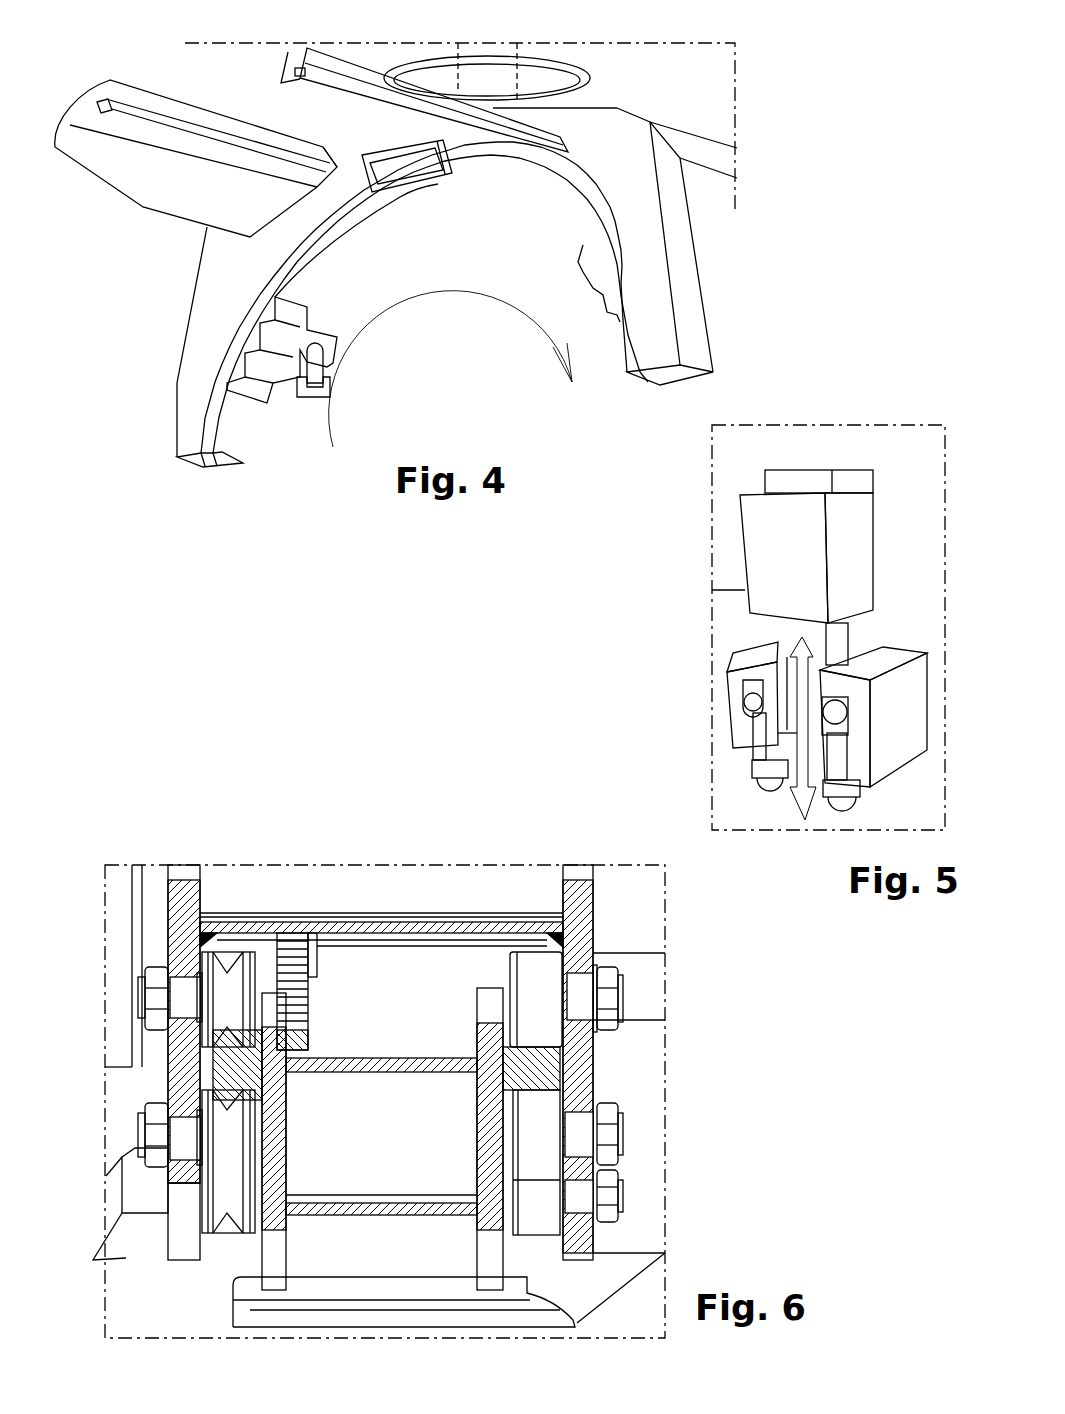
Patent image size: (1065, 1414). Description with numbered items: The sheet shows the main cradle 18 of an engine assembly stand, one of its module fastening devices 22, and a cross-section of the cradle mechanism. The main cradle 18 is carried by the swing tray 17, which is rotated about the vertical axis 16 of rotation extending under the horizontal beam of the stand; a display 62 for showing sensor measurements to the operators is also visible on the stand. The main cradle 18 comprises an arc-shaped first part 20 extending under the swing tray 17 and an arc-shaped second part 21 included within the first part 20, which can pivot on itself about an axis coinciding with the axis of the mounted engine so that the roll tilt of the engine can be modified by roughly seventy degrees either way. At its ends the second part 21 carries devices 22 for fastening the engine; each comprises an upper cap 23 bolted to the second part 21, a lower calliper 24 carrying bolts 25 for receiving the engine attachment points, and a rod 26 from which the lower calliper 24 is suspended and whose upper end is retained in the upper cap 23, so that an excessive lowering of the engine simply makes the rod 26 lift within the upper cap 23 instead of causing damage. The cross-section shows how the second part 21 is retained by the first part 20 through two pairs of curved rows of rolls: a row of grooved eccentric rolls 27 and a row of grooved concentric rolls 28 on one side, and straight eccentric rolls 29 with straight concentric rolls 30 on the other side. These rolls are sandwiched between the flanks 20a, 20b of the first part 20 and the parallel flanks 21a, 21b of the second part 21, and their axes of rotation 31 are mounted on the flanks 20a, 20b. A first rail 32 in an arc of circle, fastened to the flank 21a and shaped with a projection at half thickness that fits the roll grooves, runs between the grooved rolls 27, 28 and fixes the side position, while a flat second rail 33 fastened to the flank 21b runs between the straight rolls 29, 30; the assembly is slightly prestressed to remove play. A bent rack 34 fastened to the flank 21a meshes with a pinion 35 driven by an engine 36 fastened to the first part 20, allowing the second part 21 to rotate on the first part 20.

In FIG. 4, the vertical axis of rotation 16 is at (537, 55).
In FIG. 4, the swing tray 17 is at (164, 175).
In FIG. 4, the main cradle 18 is at (432, 336).
In FIG. 4, the first part 20 is at (235, 277).
In FIG. 6, the first part 20 is at (183, 1200).
In FIG. 6, the flank of the first part 20a is at (200, 893).
In FIG. 6, the flank of the first part 20b is at (597, 907).
In FIG. 4, the second part 21 is at (230, 325).
In FIG. 5, the second part 21 is at (732, 602).
In FIG. 6, the second part 21 is at (453, 1330).
In FIG. 6, the flank of the second part 21a is at (286, 1123).
In FIG. 6, the flank of the second part 21b is at (477, 1153).
In FIG. 4, the fastening device 22 is at (305, 418).
In FIG. 5, the fastening device 22 is at (748, 684).
In FIG. 5, the upper cap 23 is at (765, 547).
In FIG. 5, the lower calliper 24 is at (728, 720).
In FIG. 5, the bolts 25 is at (841, 797).
In FIG. 5, the rod 26 is at (813, 660).
In FIG. 6, the grooved eccentric rolls 27 is at (220, 982).
In FIG. 6, the grooved concentric rolls 28 is at (220, 1163).
In FIG. 6, the straight eccentric rolls 29 is at (537, 973).
In FIG. 6, the straight concentric rolls 30 is at (537, 1170).
In FIG. 6, the axes of rotation 31 is at (580, 1002).
In FIG. 6, the first rail 32 is at (232, 1070).
In FIG. 6, the second rail 33 is at (534, 1097).
In FIG. 6, the bent rack 34 is at (305, 1012).
In FIG. 6, the pinion 35 is at (307, 967).
In FIG. 6, the engine 36 is at (220, 960).
In FIG. 4, the displays 62 is at (388, 160).